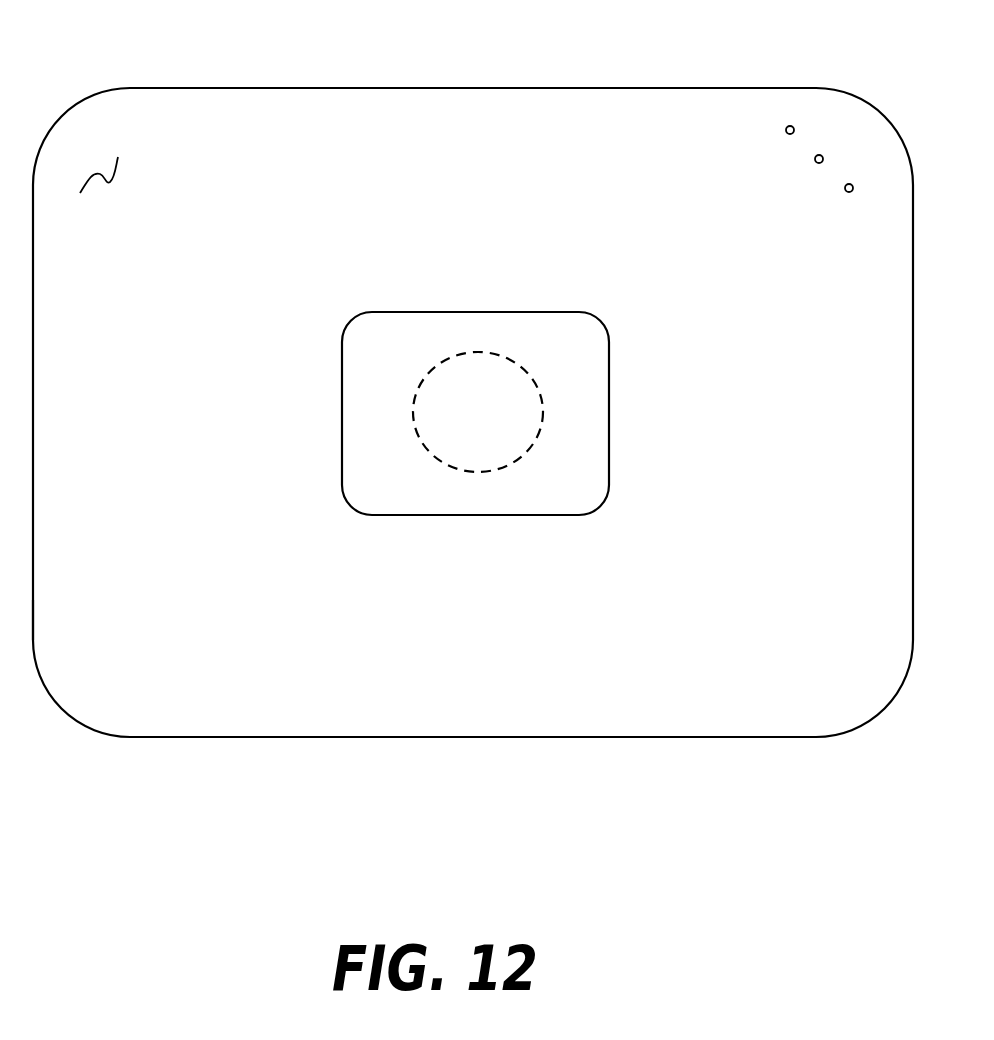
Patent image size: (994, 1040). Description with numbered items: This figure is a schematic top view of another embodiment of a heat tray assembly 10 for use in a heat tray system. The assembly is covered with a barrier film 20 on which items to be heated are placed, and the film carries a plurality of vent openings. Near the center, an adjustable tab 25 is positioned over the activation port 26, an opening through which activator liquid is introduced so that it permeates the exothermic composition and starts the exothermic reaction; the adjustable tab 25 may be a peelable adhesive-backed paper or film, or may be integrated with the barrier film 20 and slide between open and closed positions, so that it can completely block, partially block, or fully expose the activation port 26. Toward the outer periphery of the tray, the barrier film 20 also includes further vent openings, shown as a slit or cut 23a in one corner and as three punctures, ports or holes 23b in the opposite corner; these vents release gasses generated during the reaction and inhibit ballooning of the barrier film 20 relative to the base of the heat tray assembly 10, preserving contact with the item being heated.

The heat tray assembly 10 is at (282, 749).
The barrier film 20 is at (95, 602).
The slit or cut 23a is at (121, 141).
The punctures, ports or holes 23b is at (848, 171).
The adjustable tab 25 is at (548, 492).
The activation port 26 is at (442, 464).